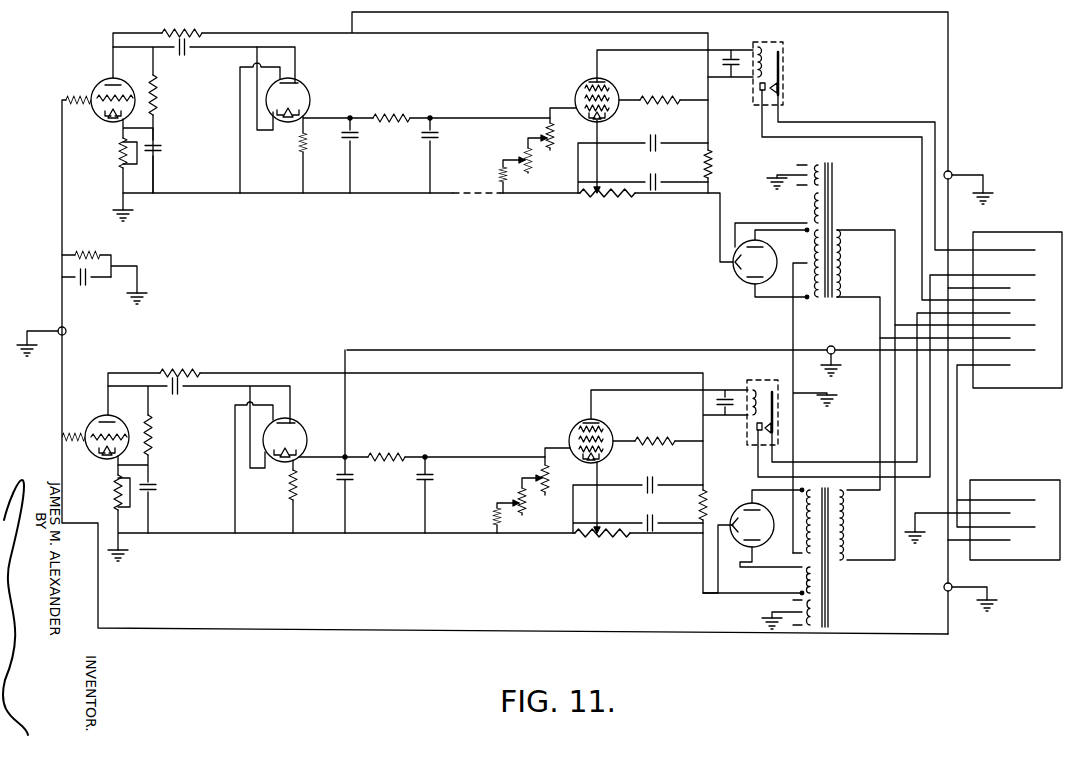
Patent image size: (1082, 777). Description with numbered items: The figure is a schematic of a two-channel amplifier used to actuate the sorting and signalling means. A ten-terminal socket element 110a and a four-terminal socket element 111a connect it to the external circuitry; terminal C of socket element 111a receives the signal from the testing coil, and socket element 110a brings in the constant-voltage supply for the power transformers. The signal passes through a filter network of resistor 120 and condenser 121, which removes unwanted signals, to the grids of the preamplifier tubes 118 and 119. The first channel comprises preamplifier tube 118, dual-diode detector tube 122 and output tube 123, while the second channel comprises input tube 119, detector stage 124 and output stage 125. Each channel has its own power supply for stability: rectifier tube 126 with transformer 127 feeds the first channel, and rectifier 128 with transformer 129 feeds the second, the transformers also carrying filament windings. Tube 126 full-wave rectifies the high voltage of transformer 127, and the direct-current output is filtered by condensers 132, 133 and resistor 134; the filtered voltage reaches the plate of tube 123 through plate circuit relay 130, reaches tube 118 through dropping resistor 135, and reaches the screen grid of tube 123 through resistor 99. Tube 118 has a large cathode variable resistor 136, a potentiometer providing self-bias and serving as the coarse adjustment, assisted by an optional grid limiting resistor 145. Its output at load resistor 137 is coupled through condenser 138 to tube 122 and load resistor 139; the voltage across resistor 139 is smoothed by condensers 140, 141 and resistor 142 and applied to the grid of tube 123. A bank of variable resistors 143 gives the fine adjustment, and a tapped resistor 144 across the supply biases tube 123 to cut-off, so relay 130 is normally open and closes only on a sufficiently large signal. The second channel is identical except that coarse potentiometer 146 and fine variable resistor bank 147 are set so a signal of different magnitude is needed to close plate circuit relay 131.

The resistor 99 is at (660, 90).
The ten-terminal socket element 110a is at (1018, 232).
The four-terminal socket element 111a is at (1009, 483).
The preamplifier tube 118 is at (102, 86).
The input tube 119 is at (97, 421).
The resistor 120 is at (99, 264).
The condenser 121 is at (85, 285).
The dual-diode tube 122 is at (297, 88).
The output tube 123 is at (578, 97).
The detector stage 124 is at (292, 425).
The output stage 125 is at (574, 423).
The rectifier tube 126 is at (733, 279).
The transformer 127 is at (838, 183).
The rectifier 128 is at (745, 506).
The transformer 129 is at (834, 596).
The plate circuit relay 130 is at (786, 80).
The plate circuit relay 131 is at (759, 403).
The condenser 132 is at (653, 175).
The condenser 133 is at (653, 136).
The resistor 134 is at (716, 150).
The dropping resistor 135 is at (186, 33).
The cathode variable resistor 136 is at (108, 154).
The load resistor 137 is at (157, 92).
The condenser 138 is at (190, 59).
The load resistor 139 is at (298, 150).
The condenser 140 is at (357, 140).
The condenser 141 is at (436, 140).
The resistor 142 is at (393, 112).
The bank of variable resistors 143 is at (518, 157).
The tapped resistor 144 is at (604, 199).
The grid limiting resistor 145 is at (65, 99).
The coarse potentiometer 146 is at (114, 498).
The fine variable resistor bank 147 is at (508, 504).